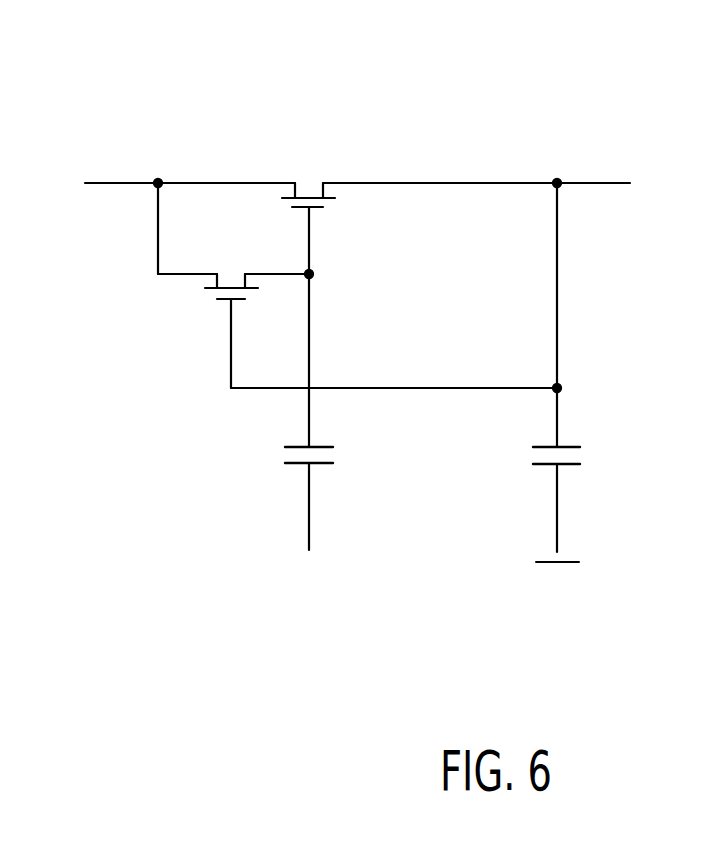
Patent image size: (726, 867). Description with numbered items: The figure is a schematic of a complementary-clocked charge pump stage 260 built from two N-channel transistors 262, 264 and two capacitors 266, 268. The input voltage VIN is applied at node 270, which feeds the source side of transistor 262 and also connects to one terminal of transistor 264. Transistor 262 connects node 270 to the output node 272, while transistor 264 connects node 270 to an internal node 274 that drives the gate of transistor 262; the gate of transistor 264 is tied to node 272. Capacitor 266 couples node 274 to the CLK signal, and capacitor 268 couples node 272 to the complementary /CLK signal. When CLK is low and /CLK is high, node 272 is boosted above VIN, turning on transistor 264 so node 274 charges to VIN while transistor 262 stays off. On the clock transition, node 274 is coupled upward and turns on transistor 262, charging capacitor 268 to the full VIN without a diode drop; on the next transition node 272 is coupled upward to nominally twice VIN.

The charge pump stage 260 is at (601, 38).
The N-channel transistor 262 is at (309, 182).
The N-channel transistor 264 is at (207, 292).
The capacitor 266 is at (280, 456).
The capacitor 268 is at (580, 455).
The node 270 is at (118, 182).
The node 272 is at (443, 182).
The node 274 is at (311, 305).